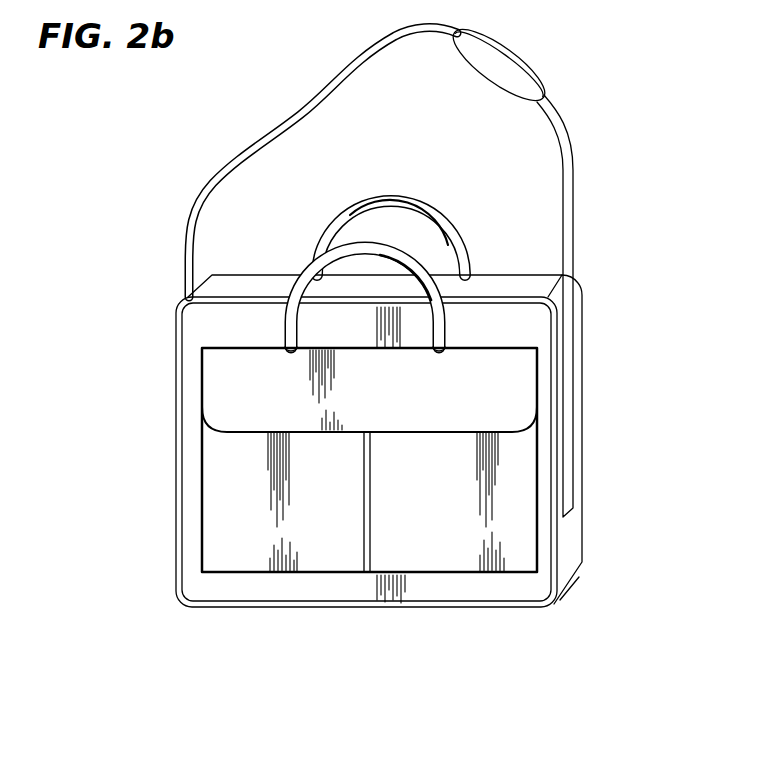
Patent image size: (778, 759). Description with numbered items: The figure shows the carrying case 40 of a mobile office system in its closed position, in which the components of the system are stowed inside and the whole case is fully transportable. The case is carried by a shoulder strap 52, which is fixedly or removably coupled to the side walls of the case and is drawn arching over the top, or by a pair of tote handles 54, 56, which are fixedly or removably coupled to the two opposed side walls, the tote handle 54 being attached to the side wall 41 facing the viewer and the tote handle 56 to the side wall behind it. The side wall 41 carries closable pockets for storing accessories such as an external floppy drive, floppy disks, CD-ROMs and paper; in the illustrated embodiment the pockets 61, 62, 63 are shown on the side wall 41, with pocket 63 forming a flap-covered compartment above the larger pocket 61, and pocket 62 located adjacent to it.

The carrying case 40 is at (102, 135).
The side wall 41 is at (522, 323).
The shoulder strap 52 is at (253, 143).
The tote handle 54 is at (300, 262).
The tote handle 56 is at (405, 197).
The pocket 61 is at (202, 525).
The pocket 62 is at (443, 573).
The pocket 63 is at (202, 398).